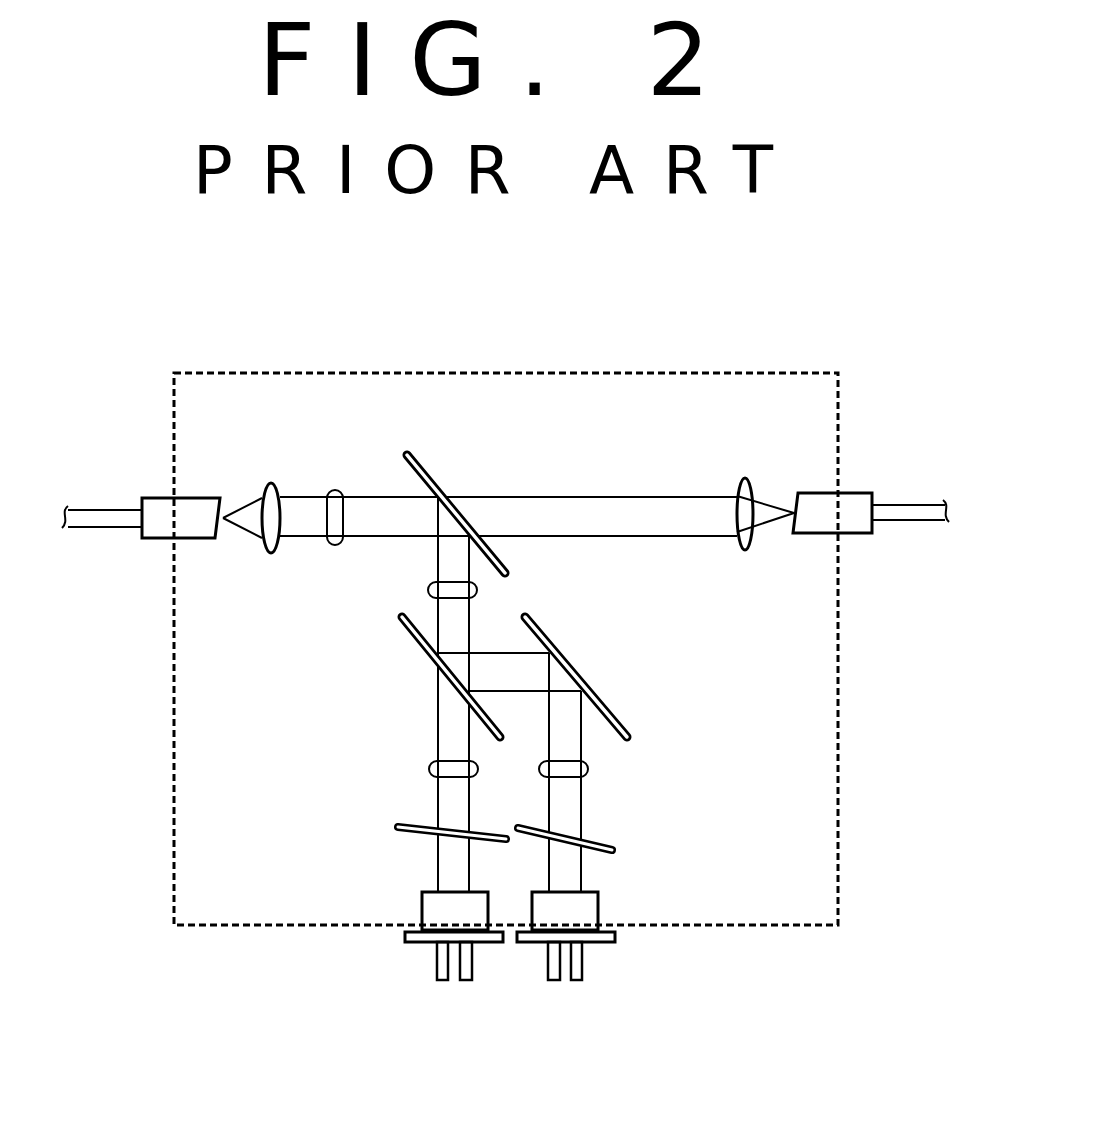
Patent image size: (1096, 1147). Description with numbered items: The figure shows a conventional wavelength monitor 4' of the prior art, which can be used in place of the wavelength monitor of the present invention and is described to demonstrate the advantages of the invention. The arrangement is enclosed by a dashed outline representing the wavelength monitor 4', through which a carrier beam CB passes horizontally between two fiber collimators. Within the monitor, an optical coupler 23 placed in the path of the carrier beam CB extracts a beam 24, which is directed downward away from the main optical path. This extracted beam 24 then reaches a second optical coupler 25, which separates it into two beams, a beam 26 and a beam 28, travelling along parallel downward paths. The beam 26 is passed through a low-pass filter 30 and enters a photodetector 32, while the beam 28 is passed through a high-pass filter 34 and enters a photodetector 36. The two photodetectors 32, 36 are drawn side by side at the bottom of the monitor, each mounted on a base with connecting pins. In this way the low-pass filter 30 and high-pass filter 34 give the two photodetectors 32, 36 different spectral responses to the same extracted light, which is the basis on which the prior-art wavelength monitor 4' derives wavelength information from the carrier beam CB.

The wavelength monitor 4' is at (506, 608).
The carrier beam CB is at (334, 489).
The optical coupler 23 is at (428, 472).
The beam 24 is at (428, 589).
The optical coupler 25 is at (415, 638).
The beam 26 is at (429, 766).
The beam 28 is at (588, 766).
The low-pass filter 30 is at (396, 825).
The photodetector 32 is at (422, 902).
The high-pass filter 34 is at (614, 850).
The photodetector 36 is at (598, 897).